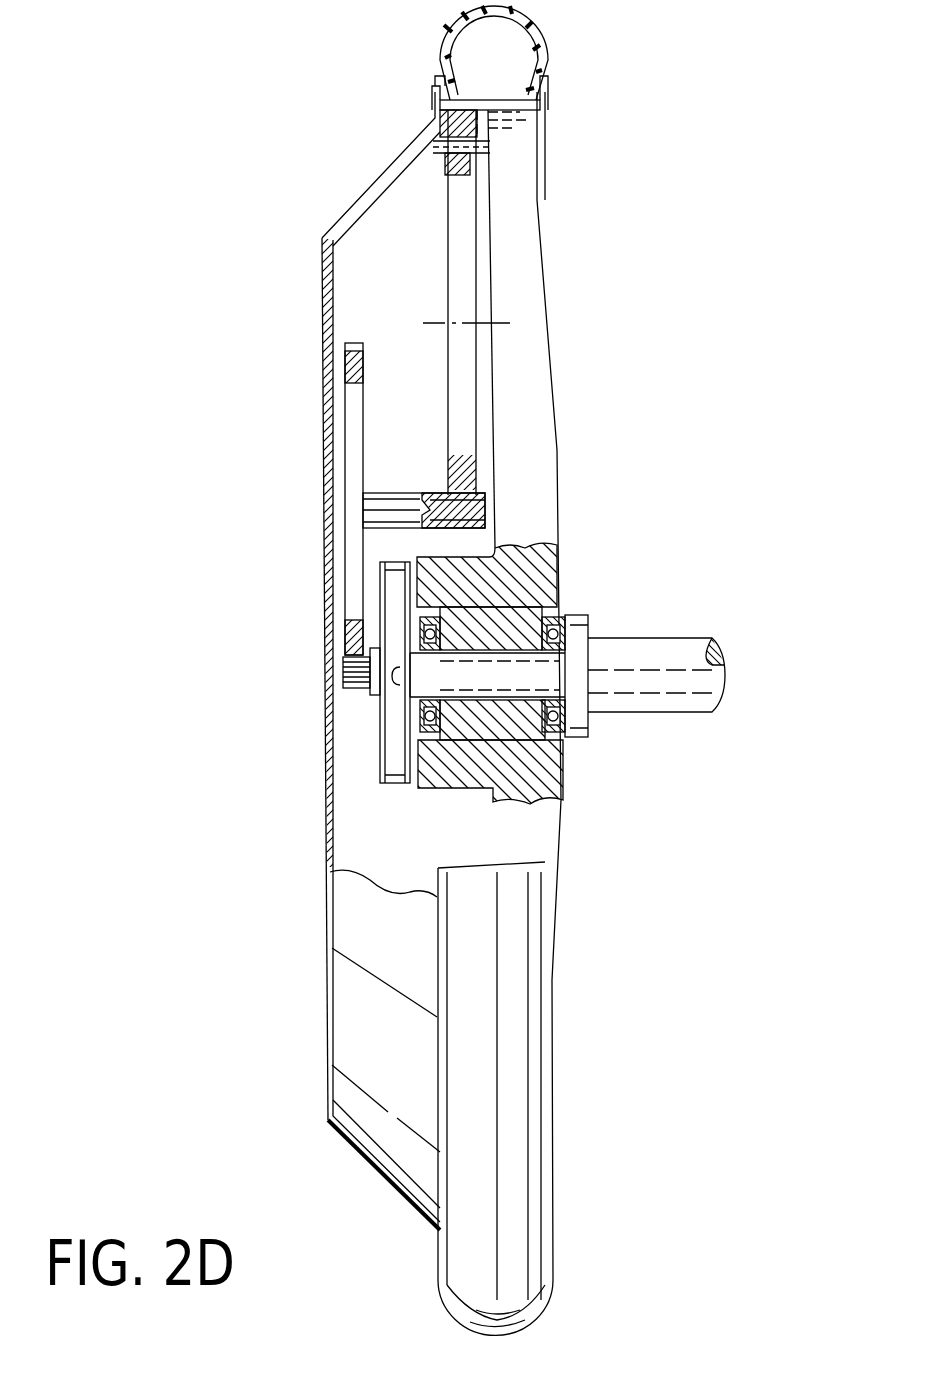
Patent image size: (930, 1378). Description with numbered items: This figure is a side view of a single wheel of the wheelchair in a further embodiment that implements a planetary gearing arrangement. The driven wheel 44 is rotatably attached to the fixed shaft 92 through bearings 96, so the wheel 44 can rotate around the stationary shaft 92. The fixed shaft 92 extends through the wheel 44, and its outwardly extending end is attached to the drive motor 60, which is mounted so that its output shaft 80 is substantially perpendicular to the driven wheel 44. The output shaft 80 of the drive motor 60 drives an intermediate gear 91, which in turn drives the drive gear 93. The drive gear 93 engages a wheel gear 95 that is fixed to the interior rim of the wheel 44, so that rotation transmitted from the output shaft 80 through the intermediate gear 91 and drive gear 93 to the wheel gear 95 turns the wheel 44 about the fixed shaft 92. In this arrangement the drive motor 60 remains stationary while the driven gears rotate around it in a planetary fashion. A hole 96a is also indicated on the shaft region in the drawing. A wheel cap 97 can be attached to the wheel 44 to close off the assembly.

The driven wheel 44 is at (540, 468).
The drive motor 60 is at (402, 790).
The output shaft 80 is at (360, 688).
The intermediate gear 91 is at (352, 411).
The fixed shaft 92 is at (645, 648).
The drive gear 93 is at (457, 250).
The wheel gear 95 is at (475, 122).
The bearings 96 is at (428, 728).
The shaft aperture 96a is at (400, 676).
The wheel cap 97 is at (323, 598).